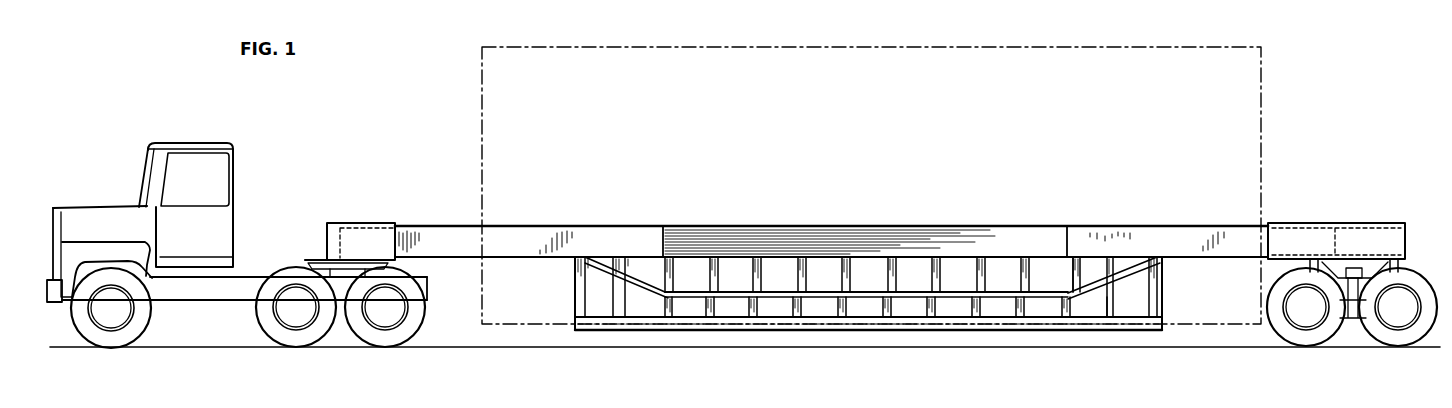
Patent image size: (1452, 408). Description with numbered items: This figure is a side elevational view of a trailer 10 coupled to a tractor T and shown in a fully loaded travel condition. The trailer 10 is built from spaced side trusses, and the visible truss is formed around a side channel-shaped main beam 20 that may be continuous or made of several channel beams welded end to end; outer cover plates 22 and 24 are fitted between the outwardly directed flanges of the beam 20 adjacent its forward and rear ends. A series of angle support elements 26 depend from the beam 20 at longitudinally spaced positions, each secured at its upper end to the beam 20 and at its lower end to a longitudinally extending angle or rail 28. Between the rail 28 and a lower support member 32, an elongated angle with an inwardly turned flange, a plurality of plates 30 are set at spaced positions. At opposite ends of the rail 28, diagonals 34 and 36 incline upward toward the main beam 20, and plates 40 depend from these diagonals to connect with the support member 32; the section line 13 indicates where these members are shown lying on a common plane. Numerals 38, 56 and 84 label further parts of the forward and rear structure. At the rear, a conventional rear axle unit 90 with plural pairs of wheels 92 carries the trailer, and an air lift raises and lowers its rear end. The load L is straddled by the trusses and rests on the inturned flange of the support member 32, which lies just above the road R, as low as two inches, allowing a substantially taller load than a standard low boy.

The trailer 10 is at (668, 135).
The section line 13- 13 is at (748, 195).
The main channel shaped beam 20 is at (1035, 243).
The outer cover plate 22 is at (540, 242).
The outer cover plate 24 is at (1190, 243).
The support element 26 is at (925, 272).
The longitudinally extending angle 28 is at (870, 296).
The plate 30 is at (988, 305).
The lower support member 32 is at (925, 325).
The diagonal 34 is at (605, 275).
The diagonal 36 is at (1135, 275).
The rear upright 38 is at (1100, 258).
The plate 40 is at (1107, 300).
The front coupling block 56 is at (375, 236).
The rear bogie coupling block 84 is at (1315, 232).
The rear axle unit 90 is at (1363, 345).
The wheels 92 is at (1308, 338).
The tractor T is at (276, 180).
The load L is at (697, 48).
The road R is at (500, 346).